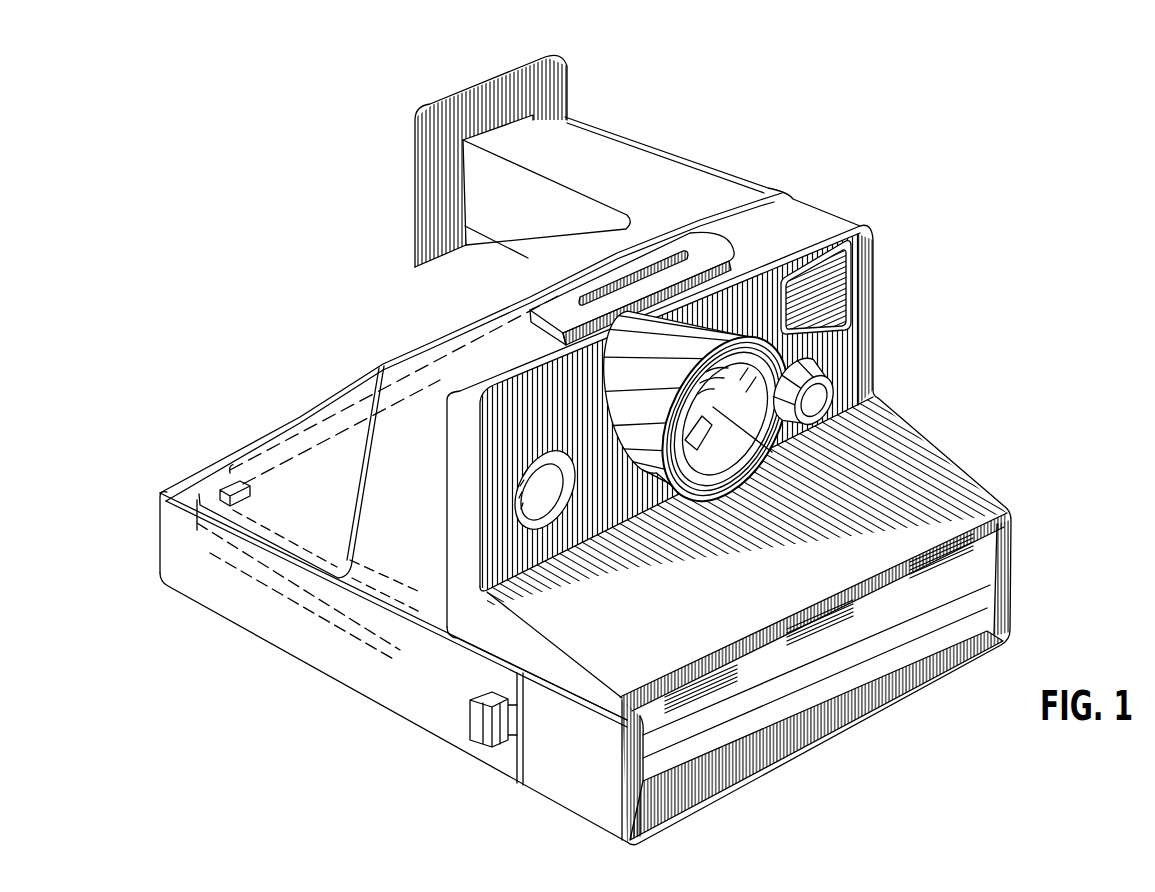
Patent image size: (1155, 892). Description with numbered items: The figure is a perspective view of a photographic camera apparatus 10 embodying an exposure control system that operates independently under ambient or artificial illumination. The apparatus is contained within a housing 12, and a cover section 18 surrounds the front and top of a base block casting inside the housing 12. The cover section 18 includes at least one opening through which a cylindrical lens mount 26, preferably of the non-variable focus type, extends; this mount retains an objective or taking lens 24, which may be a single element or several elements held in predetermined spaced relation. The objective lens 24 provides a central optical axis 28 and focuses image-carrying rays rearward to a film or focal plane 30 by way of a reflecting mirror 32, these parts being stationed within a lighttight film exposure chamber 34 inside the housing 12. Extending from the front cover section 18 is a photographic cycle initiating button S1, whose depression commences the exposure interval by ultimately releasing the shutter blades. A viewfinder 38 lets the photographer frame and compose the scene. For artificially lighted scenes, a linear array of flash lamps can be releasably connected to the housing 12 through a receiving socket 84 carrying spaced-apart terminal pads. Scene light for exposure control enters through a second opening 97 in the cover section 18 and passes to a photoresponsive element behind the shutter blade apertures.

The photographic camera apparatus 10 is at (706, 130).
The housing 12 is at (873, 300).
The cover section 18 is at (893, 457).
The objective lens 24 is at (737, 392).
The cylindrical lens mount 26 is at (786, 346).
The central optical axis 28 is at (1000, 568).
The film or focal plane 30 is at (338, 509).
The reflecting mirror 32 is at (300, 430).
The film exposure chamber 34 is at (279, 512).
The viewfinder 38 is at (645, 150).
The receiving socket 84 is at (623, 282).
The second opening 97 is at (822, 400).
The photographic cycle initiating button S1 is at (548, 495).